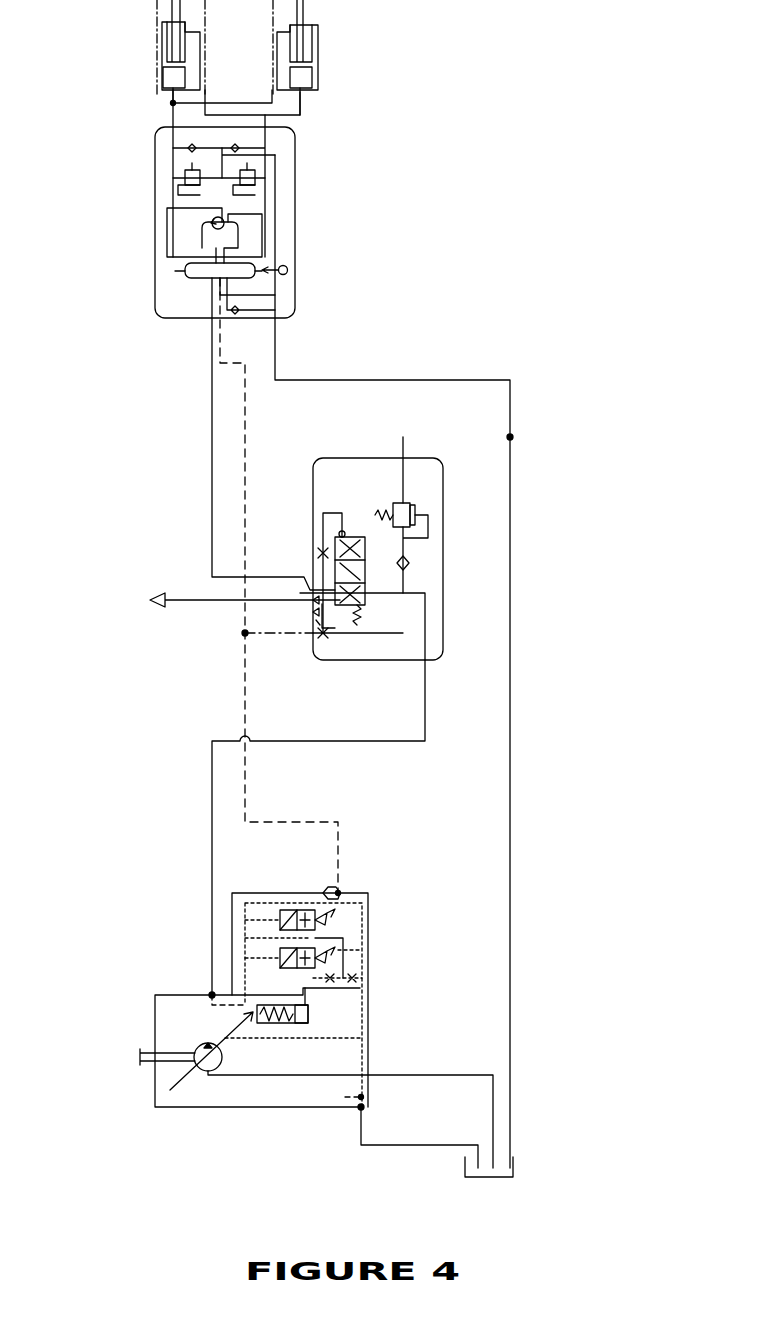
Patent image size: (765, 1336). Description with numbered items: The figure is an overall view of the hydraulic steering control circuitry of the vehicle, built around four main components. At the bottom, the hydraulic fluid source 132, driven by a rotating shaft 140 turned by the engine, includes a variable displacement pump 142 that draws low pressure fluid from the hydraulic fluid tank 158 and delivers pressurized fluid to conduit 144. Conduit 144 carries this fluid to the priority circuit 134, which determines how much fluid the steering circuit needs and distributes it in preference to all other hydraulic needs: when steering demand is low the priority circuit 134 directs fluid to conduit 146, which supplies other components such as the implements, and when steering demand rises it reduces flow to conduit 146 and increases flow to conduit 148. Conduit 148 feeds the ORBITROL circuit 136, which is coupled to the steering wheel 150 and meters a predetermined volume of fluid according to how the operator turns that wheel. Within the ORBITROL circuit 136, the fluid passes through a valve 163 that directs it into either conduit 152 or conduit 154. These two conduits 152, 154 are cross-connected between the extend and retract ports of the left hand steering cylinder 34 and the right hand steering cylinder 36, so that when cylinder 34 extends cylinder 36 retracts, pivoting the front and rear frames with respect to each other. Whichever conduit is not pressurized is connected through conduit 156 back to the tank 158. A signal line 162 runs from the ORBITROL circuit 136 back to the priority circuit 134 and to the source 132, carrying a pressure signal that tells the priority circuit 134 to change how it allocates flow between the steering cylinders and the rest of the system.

The steering cylinder 34 is at (162, 40).
The steering cylinder 36 is at (312, 18).
The hydraulic fluid conduit 152 is at (225, 103).
The hydraulic fluid conduit 154 is at (302, 100).
The ORBITROL circuit 136 is at (296, 178).
The steering wheel 150 is at (289, 268).
The valve 163 is at (183, 298).
The conduit 156 is at (320, 378).
The signal line 162 is at (245, 428).
The conduit 148 is at (210, 480).
The priority circuit 134 is at (445, 480).
The conduit 146 is at (183, 606).
The conduit 144 is at (210, 820).
The hydraulic fluid source 132 is at (372, 902).
The rotating shaft 140 is at (157, 1000).
The variable displacement pump 142 is at (223, 1057).
The hydraulic fluid tank 158 is at (515, 1162).